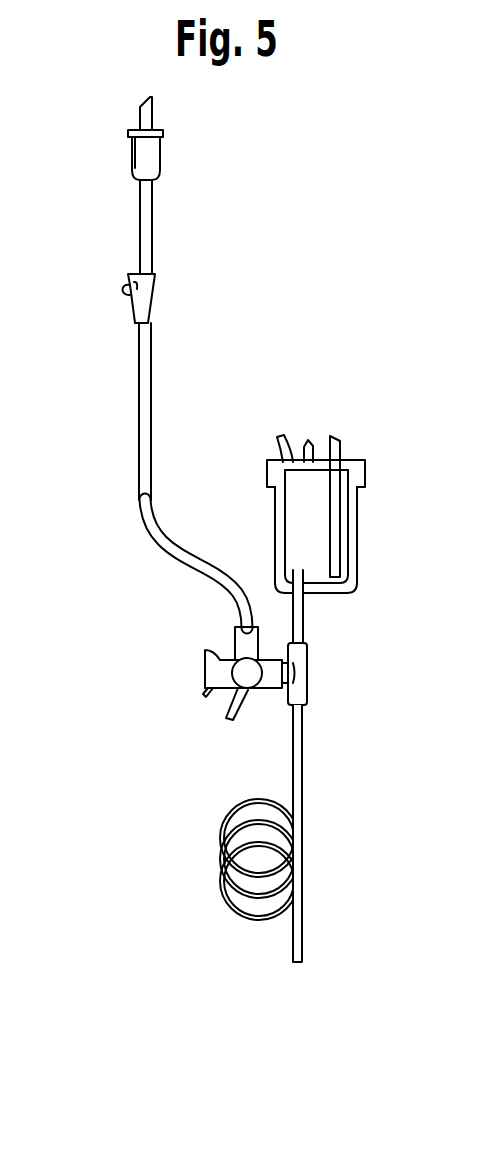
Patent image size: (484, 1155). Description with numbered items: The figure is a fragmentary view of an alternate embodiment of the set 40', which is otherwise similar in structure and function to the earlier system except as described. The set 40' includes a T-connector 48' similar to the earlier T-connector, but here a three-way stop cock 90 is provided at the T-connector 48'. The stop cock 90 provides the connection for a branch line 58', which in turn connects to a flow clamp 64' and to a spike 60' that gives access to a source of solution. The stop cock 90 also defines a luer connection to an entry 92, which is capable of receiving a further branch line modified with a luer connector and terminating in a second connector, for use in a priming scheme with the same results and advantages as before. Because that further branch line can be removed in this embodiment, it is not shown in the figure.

The spike 60' is at (197, 138).
The flow clamp 64' is at (93, 298).
The branch line 58' is at (152, 404).
The entry 92 is at (205, 660).
The three-way stop cock 90 is at (200, 694).
The T-connector 48' is at (345, 674).
The set 40' is at (309, 833).